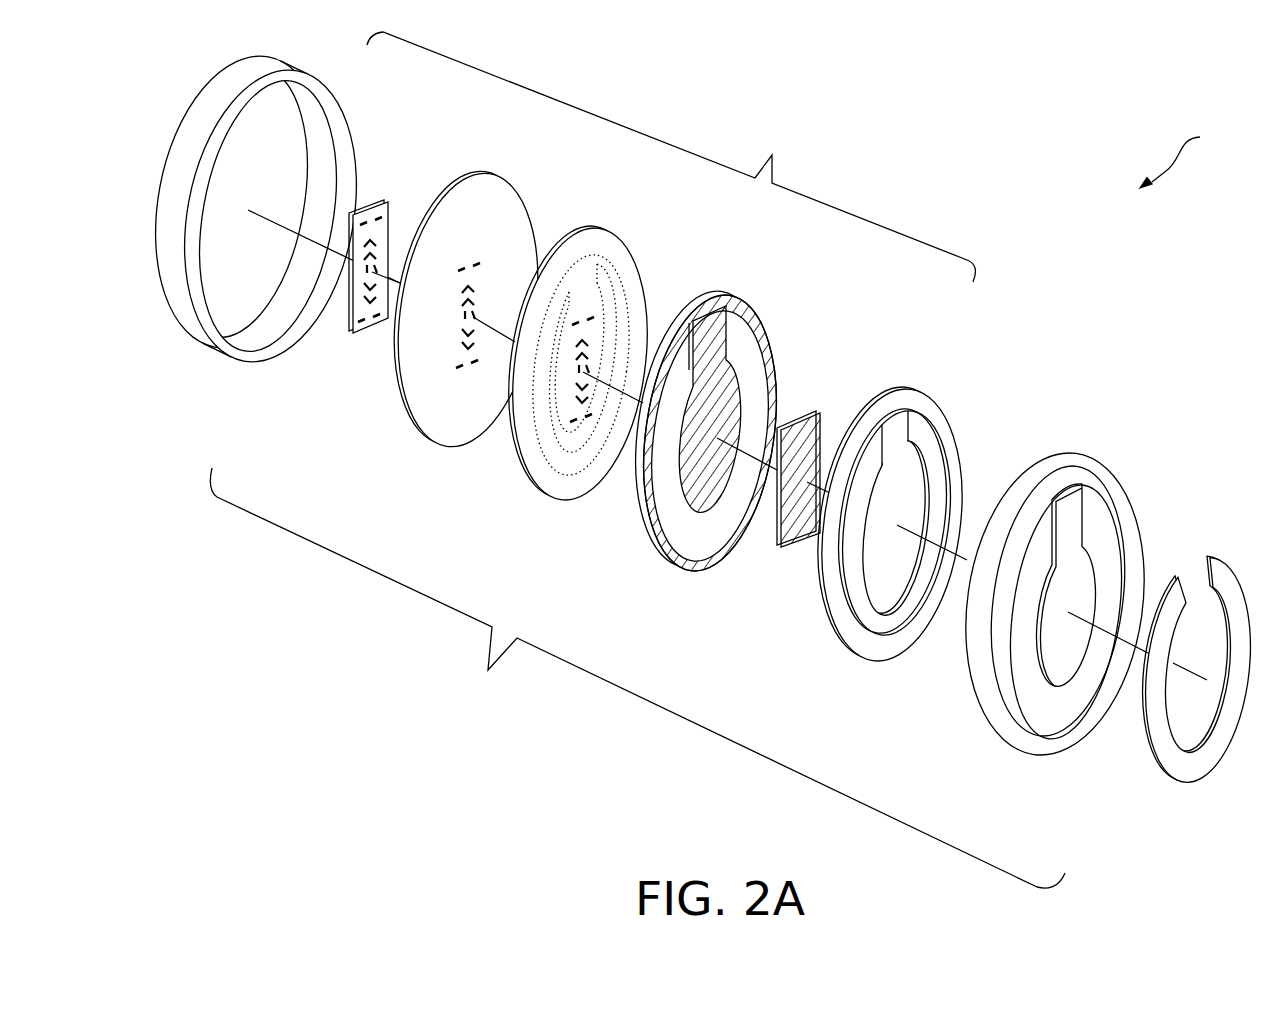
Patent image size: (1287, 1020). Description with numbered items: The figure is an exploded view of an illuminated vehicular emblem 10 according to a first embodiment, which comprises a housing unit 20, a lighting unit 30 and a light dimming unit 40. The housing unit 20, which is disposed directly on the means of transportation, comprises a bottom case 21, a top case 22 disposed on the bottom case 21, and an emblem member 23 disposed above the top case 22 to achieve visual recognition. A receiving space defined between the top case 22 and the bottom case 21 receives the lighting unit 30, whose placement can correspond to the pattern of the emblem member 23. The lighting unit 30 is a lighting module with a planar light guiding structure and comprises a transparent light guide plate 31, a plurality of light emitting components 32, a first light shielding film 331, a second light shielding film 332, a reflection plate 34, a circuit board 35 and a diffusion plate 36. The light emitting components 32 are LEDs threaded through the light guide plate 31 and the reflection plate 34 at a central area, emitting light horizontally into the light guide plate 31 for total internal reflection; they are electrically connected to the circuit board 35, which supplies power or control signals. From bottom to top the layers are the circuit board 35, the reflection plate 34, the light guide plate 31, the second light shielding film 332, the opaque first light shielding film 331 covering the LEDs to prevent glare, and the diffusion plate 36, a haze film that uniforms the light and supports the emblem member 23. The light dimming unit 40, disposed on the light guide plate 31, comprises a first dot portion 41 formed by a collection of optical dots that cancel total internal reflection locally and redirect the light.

The illuminated vehicular emblem 10 is at (1190, 149).
The housing unit 20 is at (637, 678).
The bottom case 21 is at (245, 358).
The top case 22 is at (995, 710).
The emblem member 23 is at (1175, 765).
The lighting unit 30 is at (671, 157).
The light guide plate 31 is at (578, 363).
The light emitting components 32 is at (380, 218).
The first light shielding film 331 is at (808, 417).
The second light shielding film 332 is at (720, 298).
The reflection plate 34 is at (497, 187).
The circuit board 35 is at (387, 223).
The diffusion plate 36 is at (910, 400).
The light dimming unit 40 is at (581, 411).
The first dot portion 41 is at (583, 358).